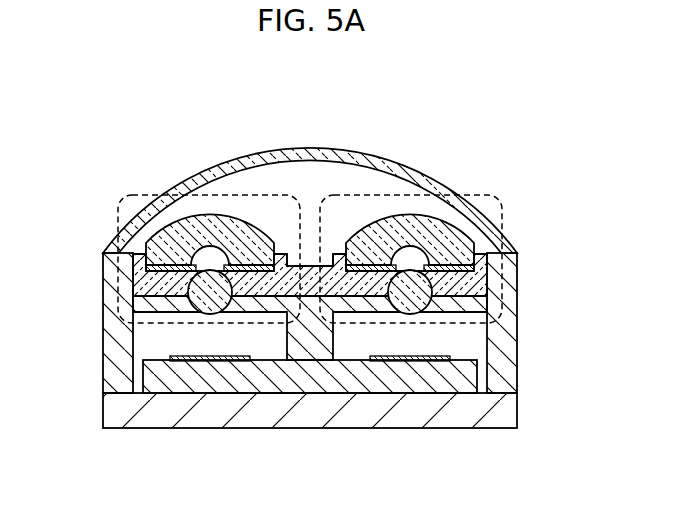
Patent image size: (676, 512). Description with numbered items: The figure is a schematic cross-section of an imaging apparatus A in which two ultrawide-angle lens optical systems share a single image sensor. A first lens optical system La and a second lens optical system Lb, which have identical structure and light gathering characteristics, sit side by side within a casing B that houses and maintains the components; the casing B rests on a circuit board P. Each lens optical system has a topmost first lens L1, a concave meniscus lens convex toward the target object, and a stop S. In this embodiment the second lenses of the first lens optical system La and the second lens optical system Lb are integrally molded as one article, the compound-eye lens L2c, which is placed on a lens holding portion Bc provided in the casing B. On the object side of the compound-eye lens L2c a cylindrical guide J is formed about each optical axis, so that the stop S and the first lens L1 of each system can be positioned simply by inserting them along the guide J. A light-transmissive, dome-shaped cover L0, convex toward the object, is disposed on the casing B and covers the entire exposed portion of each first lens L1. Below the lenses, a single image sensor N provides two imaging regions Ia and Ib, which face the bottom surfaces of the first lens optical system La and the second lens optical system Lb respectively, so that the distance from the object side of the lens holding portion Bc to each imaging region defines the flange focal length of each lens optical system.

The imaging apparatus A is at (462, 114).
The cover L0 is at (257, 160).
The cylindrical guide J is at (303, 264).
The stop S is at (202, 246).
The first lens L1 is at (158, 246).
The first lens optical system La is at (118, 218).
The second lens optical system Lb is at (500, 213).
The lens holding portion Bc is at (137, 298).
The casing B is at (116, 336).
The compound-eye lens L2c is at (192, 302).
The circuit board P is at (116, 410).
The imaging region Ia is at (207, 364).
The image sensor N is at (320, 378).
The imaging region Ib is at (412, 362).